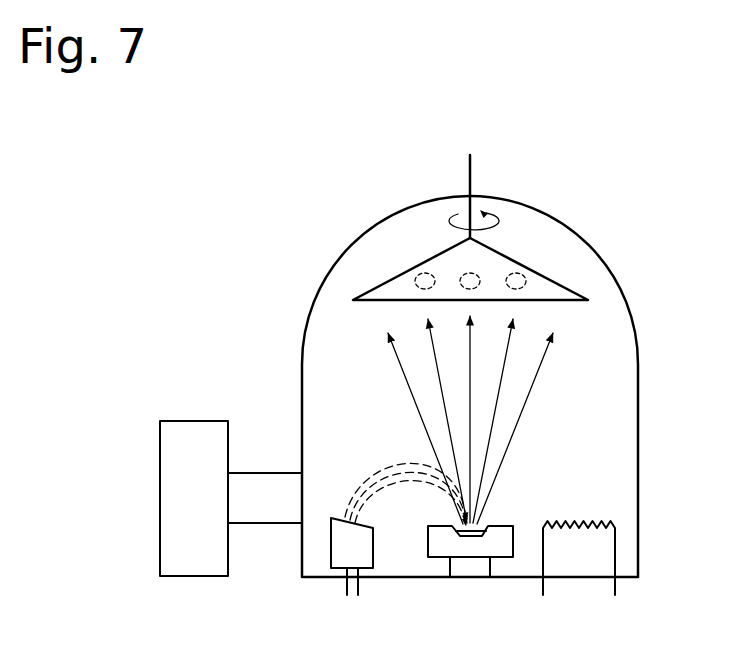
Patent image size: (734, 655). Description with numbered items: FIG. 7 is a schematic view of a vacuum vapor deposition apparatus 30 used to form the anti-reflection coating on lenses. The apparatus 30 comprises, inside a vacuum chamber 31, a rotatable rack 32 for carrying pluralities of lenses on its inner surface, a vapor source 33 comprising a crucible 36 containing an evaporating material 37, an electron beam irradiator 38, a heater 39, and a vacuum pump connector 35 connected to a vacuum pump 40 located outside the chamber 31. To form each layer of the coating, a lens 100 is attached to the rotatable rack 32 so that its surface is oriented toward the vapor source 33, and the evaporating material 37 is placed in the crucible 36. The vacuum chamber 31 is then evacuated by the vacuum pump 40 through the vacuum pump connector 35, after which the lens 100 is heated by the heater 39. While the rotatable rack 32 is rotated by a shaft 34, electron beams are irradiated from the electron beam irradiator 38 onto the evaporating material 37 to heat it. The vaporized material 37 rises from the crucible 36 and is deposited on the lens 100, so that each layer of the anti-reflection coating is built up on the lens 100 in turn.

The vacuum vapor deposition apparatus 30 is at (271, 185).
The vacuum chamber 31 is at (312, 307).
The rotatable rack 32 is at (555, 296).
The vapor source 33 is at (467, 474).
The shaft 34 is at (468, 178).
The vacuum pump connector 35 is at (260, 481).
The crucible 36 is at (501, 548).
The evaporating material 37 is at (485, 528).
The electron beam irradiator 38 is at (331, 557).
The heater 39 is at (616, 560).
The vacuum pump 40 is at (185, 421).
The lens 100 is at (513, 273).